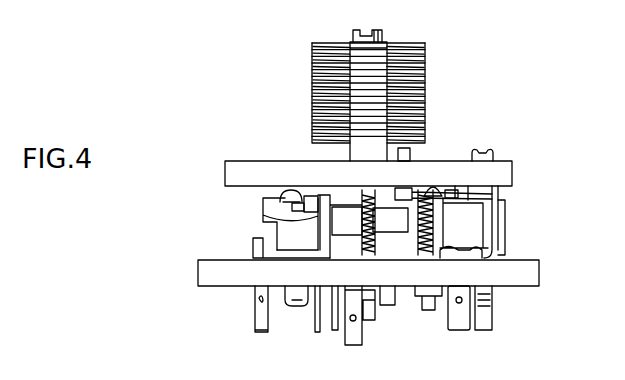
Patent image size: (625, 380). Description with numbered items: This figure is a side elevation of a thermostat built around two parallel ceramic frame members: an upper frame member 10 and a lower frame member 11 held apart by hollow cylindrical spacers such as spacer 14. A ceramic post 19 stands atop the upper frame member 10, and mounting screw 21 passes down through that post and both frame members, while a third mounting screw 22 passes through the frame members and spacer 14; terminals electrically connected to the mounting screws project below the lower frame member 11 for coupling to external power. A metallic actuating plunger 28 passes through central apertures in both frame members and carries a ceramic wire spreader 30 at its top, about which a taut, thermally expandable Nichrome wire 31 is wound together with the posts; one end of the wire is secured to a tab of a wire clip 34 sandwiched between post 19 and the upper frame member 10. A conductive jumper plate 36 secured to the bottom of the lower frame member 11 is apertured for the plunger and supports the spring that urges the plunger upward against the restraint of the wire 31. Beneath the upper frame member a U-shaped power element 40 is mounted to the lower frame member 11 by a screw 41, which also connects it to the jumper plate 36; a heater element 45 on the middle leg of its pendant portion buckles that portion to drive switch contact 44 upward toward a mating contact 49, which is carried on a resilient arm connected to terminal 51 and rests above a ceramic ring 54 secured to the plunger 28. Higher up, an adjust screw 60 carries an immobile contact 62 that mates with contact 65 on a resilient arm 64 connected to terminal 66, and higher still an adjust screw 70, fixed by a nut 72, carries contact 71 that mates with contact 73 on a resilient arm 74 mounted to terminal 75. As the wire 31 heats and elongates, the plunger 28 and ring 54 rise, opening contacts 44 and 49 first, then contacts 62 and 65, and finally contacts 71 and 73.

The upper frame member 10 is at (225, 174).
The lower frame member 11 is at (198, 271).
The ceramic post 19 is at (425, 82).
The mounting screw 21 is at (382, 34).
The third mounting screw 22 is at (493, 155).
The actuating plunger 28 is at (370, 320).
The wire spreader 30 is at (332, 42).
The thermally expandable wire 31 is at (313, 113).
The wire clip 34 is at (410, 154).
The jumper plate 36 is at (335, 330).
The power element 40 is at (268, 222).
The screw 41 is at (294, 306).
The switch contact 44 is at (312, 196).
The electrical heater element 45 is at (280, 201).
The contact 49 is at (297, 203).
The terminal 51 is at (255, 318).
The ceramic ring 54 is at (390, 230).
The adjust screw 60 is at (433, 239).
The switch contact 62 is at (455, 192).
The resilient arm 64 is at (405, 192).
The switch contact 65 is at (433, 192).
The terminal 66 is at (392, 286).
The adjust screw 70 is at (362, 241).
The switch contact 71 is at (347, 221).
The nut 72 is at (430, 310).
The switch contact 73 is at (356, 205).
The resilient arm 74 is at (464, 228).
The terminal 75 is at (505, 231).
The hollow cylindrical spacer 14 is at (498, 195).